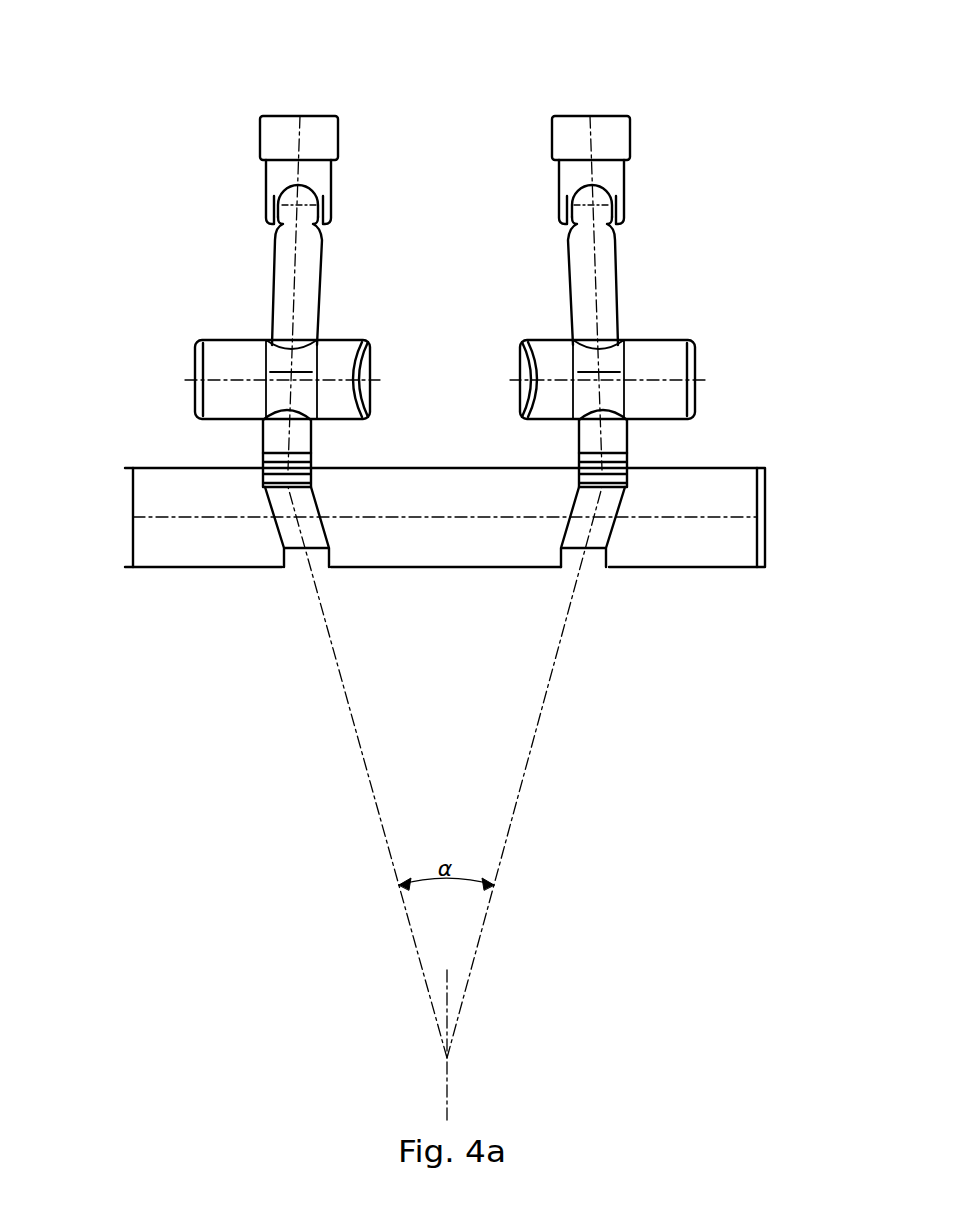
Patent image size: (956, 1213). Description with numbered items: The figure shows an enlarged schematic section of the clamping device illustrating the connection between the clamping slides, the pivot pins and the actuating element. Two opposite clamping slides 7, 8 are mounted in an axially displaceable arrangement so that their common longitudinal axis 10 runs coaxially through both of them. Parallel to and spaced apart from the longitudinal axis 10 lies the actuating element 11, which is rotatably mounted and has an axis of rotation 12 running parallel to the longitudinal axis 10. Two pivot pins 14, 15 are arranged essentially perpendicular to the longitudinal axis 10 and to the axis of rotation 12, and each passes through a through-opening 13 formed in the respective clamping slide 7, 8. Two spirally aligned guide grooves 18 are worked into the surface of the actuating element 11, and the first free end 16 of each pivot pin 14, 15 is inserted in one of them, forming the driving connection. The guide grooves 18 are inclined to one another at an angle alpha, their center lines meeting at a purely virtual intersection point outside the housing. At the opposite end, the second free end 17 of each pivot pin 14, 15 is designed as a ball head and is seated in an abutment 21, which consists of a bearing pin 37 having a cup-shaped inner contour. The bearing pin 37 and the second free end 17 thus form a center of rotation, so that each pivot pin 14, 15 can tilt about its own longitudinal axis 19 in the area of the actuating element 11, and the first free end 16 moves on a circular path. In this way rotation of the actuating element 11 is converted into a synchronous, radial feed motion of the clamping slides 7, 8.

The clamping slide 7 is at (230, 367).
The clamping slide 8 is at (660, 368).
The longitudinal axis 10 is at (230, 383).
The actuating element 11 is at (213, 552).
The axis of rotation 12 is at (722, 520).
The through-opening 13 is at (264, 427).
The pivot pin 14 is at (270, 283).
The pivot pin 15 is at (607, 287).
The first free end 16 is at (266, 489).
The second free end 17 is at (280, 207).
The guide groove 18 is at (283, 548).
The longitudinal axis 19 is at (598, 330).
The abutment 21 is at (268, 185).
The bearing pin 37 is at (318, 135).